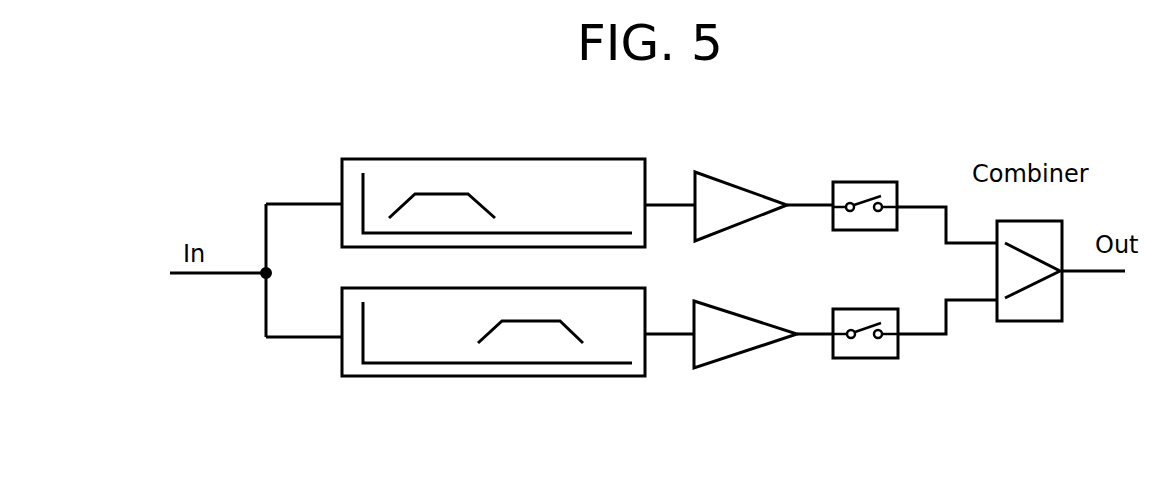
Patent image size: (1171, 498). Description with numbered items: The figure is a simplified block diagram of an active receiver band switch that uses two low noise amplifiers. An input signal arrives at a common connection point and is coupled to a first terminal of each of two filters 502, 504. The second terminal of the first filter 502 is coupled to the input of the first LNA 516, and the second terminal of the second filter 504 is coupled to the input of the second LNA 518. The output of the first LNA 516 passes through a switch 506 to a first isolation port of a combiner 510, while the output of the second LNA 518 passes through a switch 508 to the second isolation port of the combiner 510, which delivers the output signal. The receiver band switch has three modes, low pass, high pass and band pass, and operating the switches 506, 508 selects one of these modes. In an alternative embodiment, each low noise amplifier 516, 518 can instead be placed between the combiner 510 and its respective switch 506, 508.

The first filter 502 is at (500, 157).
The second filter 504 is at (438, 377).
The first low noise amplifier 516 is at (738, 180).
The second low noise amplifier 518 is at (733, 357).
The switch 506 is at (850, 182).
The switch 508 is at (898, 358).
The combiner 510 is at (1043, 321).